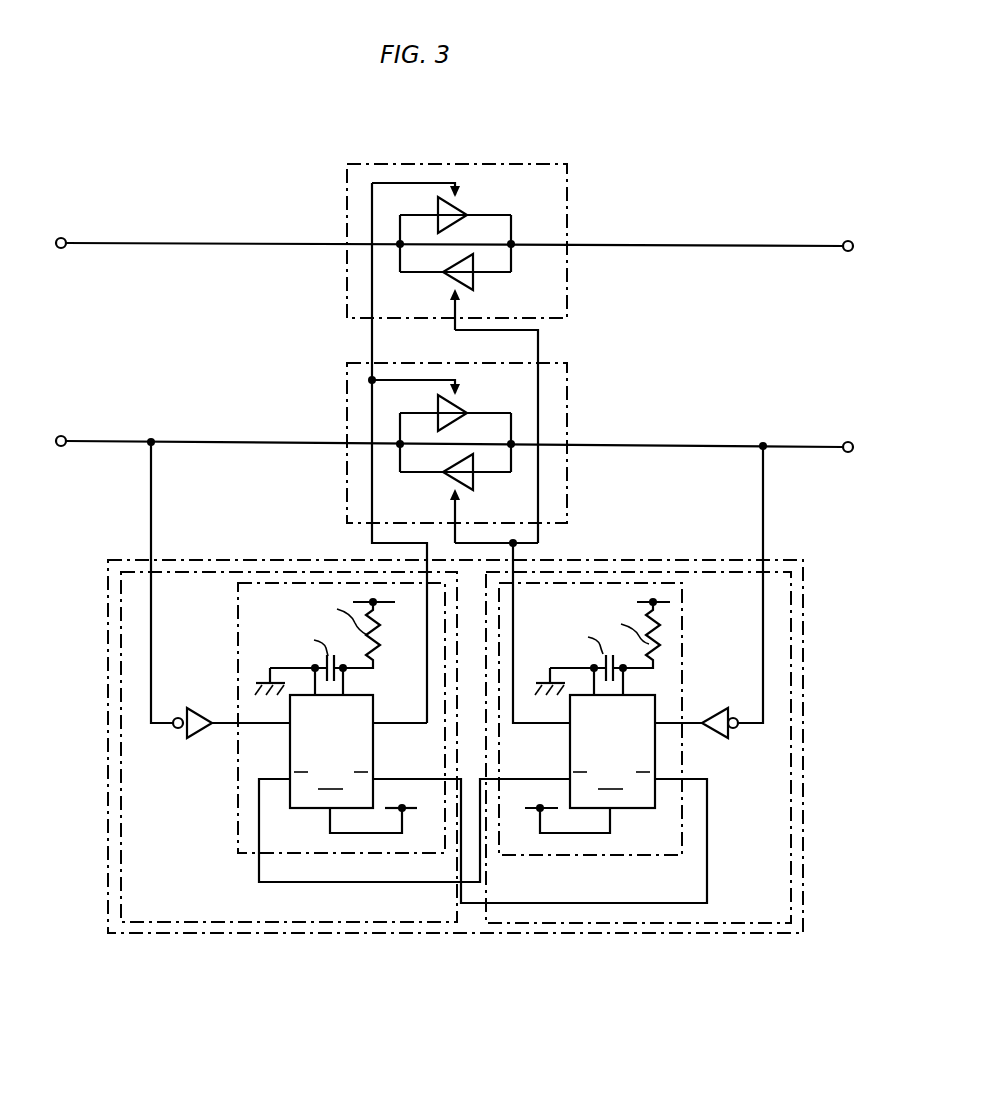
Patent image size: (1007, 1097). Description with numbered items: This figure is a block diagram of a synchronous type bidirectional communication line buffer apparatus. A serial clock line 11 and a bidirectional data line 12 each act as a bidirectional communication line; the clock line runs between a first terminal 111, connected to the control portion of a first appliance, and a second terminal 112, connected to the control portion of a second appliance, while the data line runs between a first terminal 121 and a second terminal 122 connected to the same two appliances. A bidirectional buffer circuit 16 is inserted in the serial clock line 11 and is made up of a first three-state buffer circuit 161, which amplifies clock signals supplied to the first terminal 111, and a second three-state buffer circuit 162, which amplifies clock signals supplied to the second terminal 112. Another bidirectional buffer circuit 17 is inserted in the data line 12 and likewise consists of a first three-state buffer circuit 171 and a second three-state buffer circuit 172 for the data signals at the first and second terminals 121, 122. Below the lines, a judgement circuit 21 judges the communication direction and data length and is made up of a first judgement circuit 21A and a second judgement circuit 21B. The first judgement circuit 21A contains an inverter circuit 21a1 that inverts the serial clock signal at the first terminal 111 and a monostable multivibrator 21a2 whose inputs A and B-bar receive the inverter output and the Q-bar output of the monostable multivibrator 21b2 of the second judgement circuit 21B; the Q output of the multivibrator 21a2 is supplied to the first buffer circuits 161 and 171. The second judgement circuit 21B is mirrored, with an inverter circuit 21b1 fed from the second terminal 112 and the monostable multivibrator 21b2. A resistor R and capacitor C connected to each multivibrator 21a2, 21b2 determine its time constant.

The serial clock line 11 is at (269, 439).
The first terminal 111 is at (67, 433).
The second terminal 112 is at (847, 439).
The bidirectional data line 12 is at (258, 249).
The first terminal 121 is at (65, 250).
The second terminal 122 is at (847, 253).
The bidirectional buffer circuit 16 is at (498, 453).
The first three-state buffer circuit 161 is at (466, 404).
The second three-state buffer circuit 162 is at (448, 484).
The bidirectional buffer circuit 17 is at (498, 353).
The first three-state buffer circuit 171 is at (464, 205).
The second three-state buffer circuit 172 is at (475, 282).
The judgement circuit 21 is at (253, 557).
The first judgement circuit 21A is at (121, 607).
The second judgement circuit 21B is at (792, 625).
The inverter circuit 21a1 is at (197, 706).
The monostable multivibrator 21a2 is at (238, 813).
The inverter circuit 21b1 is at (735, 741).
The monostable multivibrator 21b2 is at (682, 655).